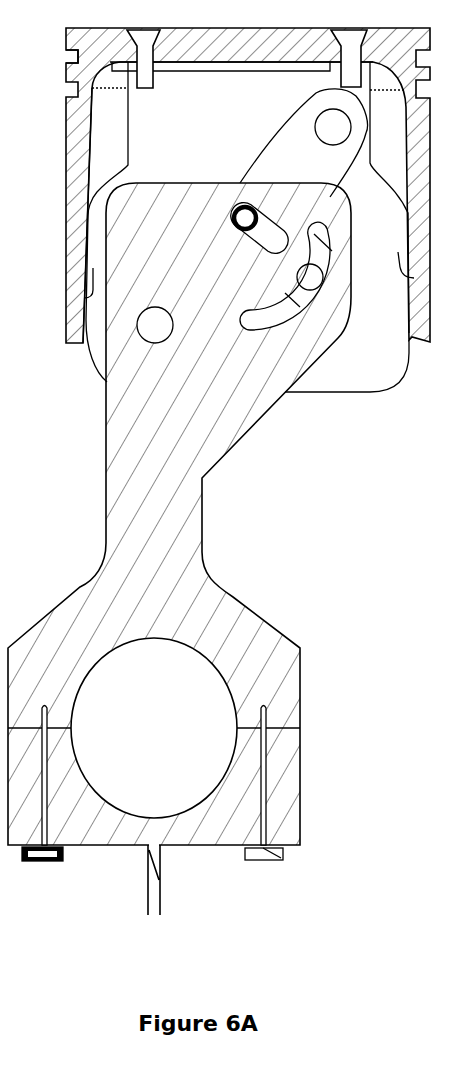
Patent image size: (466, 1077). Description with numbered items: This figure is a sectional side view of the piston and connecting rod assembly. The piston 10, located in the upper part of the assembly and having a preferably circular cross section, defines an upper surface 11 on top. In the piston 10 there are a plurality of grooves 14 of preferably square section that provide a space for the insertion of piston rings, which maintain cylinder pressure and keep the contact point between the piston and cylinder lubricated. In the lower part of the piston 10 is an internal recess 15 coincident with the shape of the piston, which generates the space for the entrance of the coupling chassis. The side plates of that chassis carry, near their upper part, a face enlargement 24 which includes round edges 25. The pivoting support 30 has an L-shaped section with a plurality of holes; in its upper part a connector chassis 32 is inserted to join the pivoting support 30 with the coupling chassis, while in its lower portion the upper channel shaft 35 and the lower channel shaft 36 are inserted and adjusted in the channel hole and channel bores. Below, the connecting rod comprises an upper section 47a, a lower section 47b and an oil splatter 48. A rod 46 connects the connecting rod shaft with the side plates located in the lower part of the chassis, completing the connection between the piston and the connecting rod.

The piston 10 is at (423, 346).
The upper surface 11 is at (432, 40).
The grooves 14 is at (66, 65).
The internal recess 15 is at (102, 112).
The face enlargement 24 is at (70, 304).
The round edges 25 is at (106, 189).
The pivoting support 30 is at (296, 165).
The connector chassis 32 is at (330, 132).
The upper channel shaft 35 is at (240, 208).
The lower channel shaft 36 is at (338, 306).
The rod 46 is at (141, 333).
The upper section 47a is at (280, 688).
The lower section 47b is at (302, 755).
The oil splatter 48 is at (160, 893).